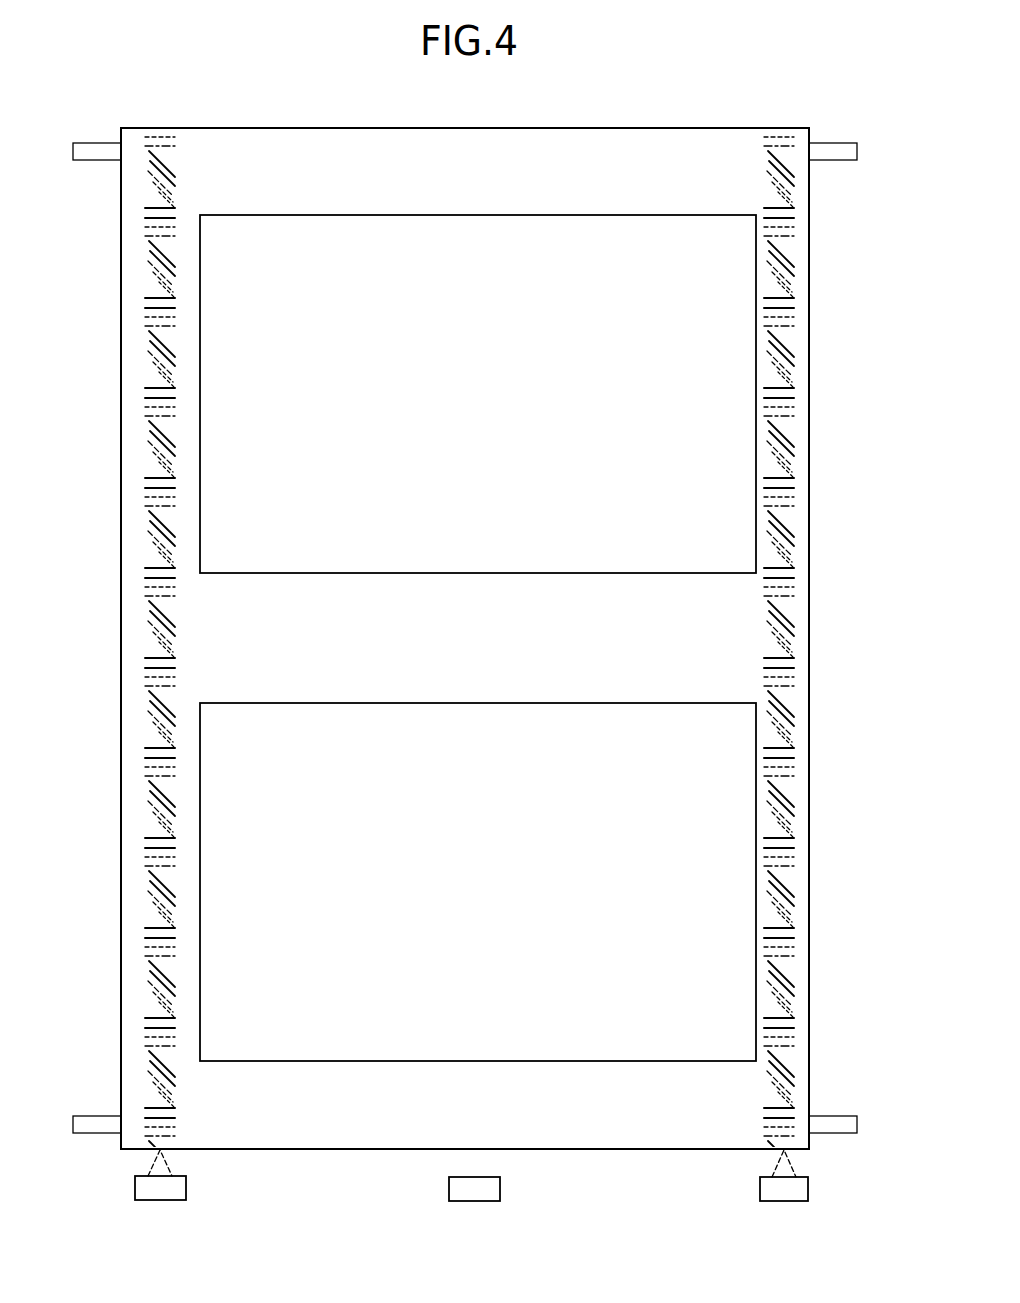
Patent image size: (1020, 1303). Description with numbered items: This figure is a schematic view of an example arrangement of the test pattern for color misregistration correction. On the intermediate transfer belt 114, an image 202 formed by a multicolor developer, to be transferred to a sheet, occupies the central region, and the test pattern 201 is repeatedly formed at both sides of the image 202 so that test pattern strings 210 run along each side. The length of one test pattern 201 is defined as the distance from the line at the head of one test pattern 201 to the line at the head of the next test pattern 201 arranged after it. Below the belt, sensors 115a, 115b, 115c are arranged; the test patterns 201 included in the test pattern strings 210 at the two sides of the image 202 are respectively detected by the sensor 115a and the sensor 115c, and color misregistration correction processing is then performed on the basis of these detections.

The intermediate transfer belt 114 is at (629, 1136).
The sensor 115a is at (172, 1201).
The connector 115b is at (482, 1202).
The sensor 115c is at (794, 1202).
The test pattern 201 is at (118, 207).
The image 202 is at (707, 508).
The test pattern string 210 is at (198, 175).